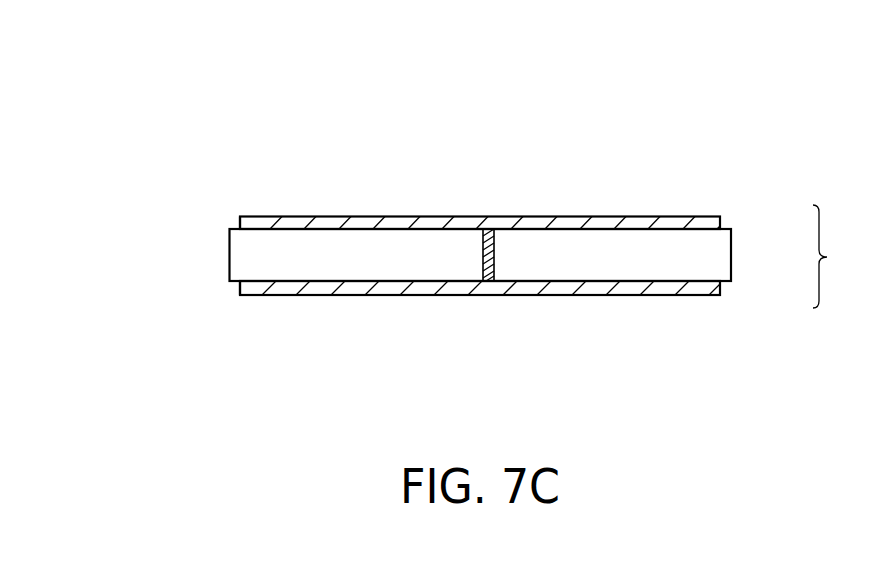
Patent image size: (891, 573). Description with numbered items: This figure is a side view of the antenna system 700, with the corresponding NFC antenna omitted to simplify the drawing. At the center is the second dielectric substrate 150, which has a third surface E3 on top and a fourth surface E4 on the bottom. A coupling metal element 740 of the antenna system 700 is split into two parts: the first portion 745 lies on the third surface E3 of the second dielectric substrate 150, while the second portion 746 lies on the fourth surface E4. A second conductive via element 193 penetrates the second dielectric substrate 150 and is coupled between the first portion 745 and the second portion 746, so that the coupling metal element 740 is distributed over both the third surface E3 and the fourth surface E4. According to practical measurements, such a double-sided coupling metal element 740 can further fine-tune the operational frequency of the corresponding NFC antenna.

The antenna system 700 is at (115, 65).
The second dielectric substrate 150 is at (243, 257).
The first portion 745 is at (707, 224).
The second portion 746 is at (707, 290).
The coupling metal element 740 is at (844, 256).
The second conductive via element 193 is at (494, 253).
The third surface E3 is at (239, 221).
The fourth surface E4 is at (238, 289).